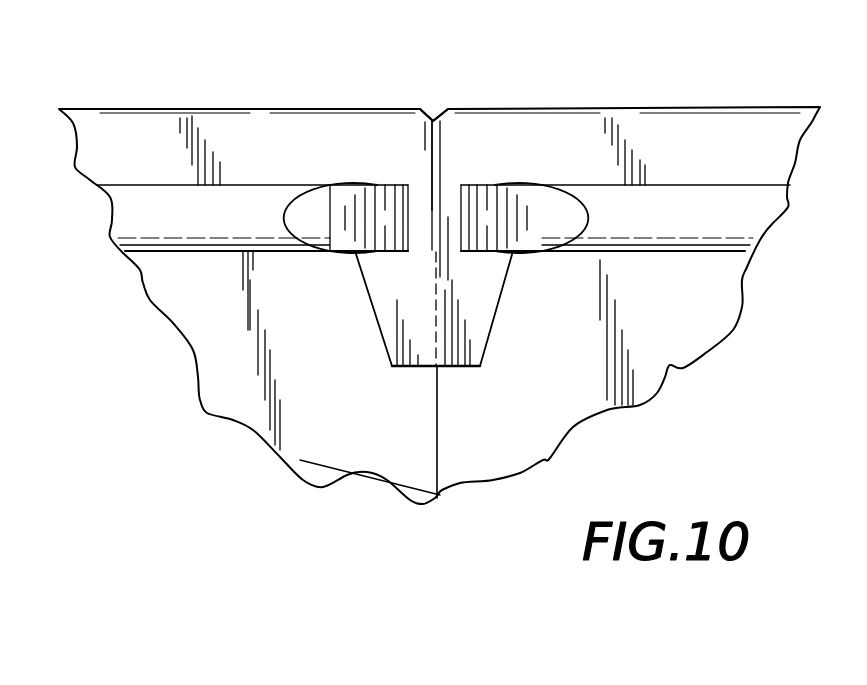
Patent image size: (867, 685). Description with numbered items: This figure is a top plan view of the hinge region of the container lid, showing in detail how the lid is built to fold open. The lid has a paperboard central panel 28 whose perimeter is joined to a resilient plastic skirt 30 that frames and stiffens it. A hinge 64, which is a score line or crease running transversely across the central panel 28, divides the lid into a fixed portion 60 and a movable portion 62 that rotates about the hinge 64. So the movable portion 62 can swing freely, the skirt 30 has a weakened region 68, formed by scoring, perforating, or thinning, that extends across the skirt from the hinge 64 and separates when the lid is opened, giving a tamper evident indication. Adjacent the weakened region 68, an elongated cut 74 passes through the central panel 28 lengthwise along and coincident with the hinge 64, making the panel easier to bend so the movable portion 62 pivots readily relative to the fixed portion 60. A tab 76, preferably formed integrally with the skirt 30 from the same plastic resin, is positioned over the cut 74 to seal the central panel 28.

The plastic skirt 30 is at (728, 107).
The weakened region 68 is at (437, 108).
The movable portion 62 is at (153, 292).
The fixed portion 60 is at (722, 292).
The elongated cut 74 is at (437, 307).
The tab 76 is at (475, 348).
The paperboard central panel 28 is at (355, 393).
The hinge 64 is at (437, 420).